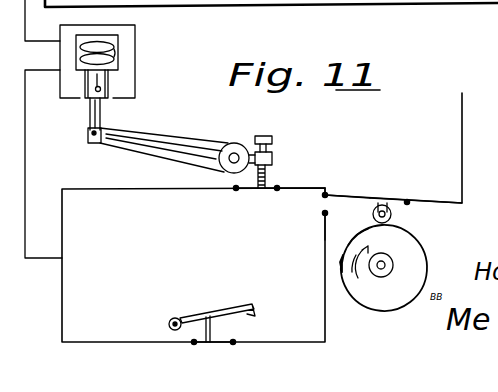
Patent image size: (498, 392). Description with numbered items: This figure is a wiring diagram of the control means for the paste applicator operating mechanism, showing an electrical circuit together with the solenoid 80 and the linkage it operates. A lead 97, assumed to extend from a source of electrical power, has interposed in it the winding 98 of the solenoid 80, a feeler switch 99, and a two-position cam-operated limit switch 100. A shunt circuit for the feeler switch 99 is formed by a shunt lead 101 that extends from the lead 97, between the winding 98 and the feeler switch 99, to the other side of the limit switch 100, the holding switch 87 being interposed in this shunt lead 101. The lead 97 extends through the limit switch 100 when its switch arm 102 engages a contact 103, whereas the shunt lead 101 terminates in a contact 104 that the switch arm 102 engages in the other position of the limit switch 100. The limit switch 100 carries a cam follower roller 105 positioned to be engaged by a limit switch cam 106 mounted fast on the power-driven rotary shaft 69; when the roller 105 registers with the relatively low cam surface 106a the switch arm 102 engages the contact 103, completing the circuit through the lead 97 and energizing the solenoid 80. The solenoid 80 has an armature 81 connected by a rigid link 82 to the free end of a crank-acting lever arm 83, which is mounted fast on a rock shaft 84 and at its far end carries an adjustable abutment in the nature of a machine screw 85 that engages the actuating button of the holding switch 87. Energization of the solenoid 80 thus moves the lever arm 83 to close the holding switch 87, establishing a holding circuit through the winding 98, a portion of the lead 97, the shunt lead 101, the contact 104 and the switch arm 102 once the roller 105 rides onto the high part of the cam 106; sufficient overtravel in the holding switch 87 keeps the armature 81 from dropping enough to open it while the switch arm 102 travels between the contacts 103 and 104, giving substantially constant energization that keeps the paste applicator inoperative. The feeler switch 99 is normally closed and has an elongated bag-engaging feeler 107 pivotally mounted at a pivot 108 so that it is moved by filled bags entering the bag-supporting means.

The power-driven rotary shaft 69 is at (387, 262).
The solenoid 80 is at (137, 48).
The armature 81 is at (86, 88).
The rigid link 82 is at (101, 119).
The lever arm 83 is at (176, 140).
The rock shaft 84 is at (234, 156).
The machine screw 85 is at (273, 166).
The holding switch 87 is at (283, 186).
The lead 97 is at (28, 40).
The winding 98 is at (129, 46).
The feeler switch 99 is at (219, 345).
The limit switch 100 is at (369, 195).
The shunt lead 101 is at (64, 220).
The switch arm 102 is at (361, 188).
The contact 103 is at (322, 216).
The contact 104 is at (321, 197).
The cam follower roller 105 is at (393, 216).
The limit switch cam 106 is at (375, 296).
The low cam surface 106a is at (361, 231).
The bag-engaging feeler 107 is at (232, 296).
The pivot 108 is at (174, 319).